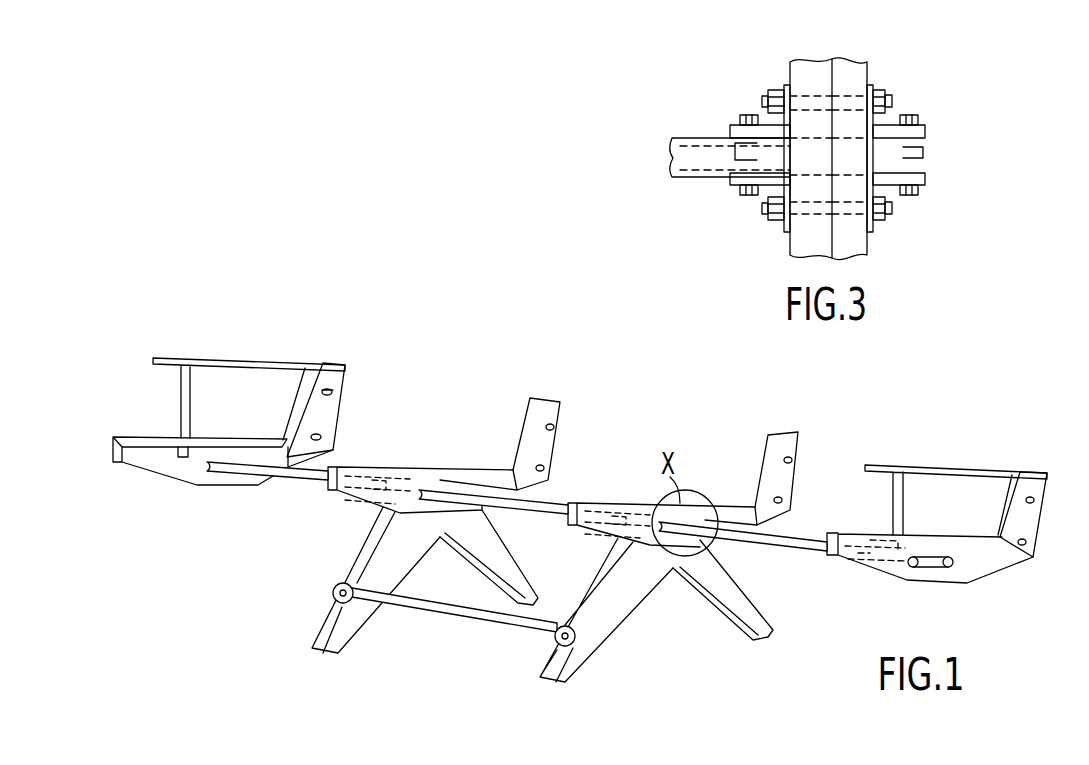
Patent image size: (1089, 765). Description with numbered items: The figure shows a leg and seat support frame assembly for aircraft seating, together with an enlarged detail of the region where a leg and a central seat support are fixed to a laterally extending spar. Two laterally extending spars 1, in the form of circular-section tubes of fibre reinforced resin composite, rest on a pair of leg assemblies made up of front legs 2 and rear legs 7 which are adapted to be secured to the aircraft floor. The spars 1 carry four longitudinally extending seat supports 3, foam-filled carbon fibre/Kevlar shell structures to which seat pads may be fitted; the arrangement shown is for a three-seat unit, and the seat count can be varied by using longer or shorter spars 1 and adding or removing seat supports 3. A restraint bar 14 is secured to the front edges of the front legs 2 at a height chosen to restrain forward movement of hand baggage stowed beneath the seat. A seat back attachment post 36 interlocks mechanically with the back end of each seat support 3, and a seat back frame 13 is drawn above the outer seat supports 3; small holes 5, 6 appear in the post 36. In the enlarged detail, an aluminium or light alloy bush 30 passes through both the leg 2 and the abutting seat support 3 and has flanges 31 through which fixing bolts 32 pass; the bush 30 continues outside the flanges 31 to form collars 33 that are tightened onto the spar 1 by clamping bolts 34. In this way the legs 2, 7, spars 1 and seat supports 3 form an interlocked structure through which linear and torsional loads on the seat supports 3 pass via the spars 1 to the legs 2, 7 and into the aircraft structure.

In FIG. 3, the laterally extending spar 1 is at (675, 153).
In FIG. 1, the laterally extending spar 1 is at (285, 482).
In FIG. 3, the front leg 2 is at (808, 61).
In FIG. 1, the front leg 2 is at (400, 565).
In FIG. 3, the seat support 3 is at (851, 61).
In FIG. 1, the seat support 3 is at (153, 463).
In FIG. 1, the hole 5 is at (334, 393).
In FIG. 1, the hole 6 is at (322, 437).
In FIG. 1, the leg 7 is at (514, 572).
In FIG. 1, the backrest 13 is at (249, 358).
In FIG. 1, the restraint bar 14 is at (332, 606).
In FIG. 3, the bush 30 is at (858, 126).
In FIG. 3, the flange 31 is at (786, 84).
In FIG. 3, the fixing bolt 32 is at (886, 102).
In FIG. 3, the collar 33 is at (892, 153).
In FIG. 3, the clamping bolt 34 is at (733, 127).
In FIG. 1, the seat back attachment post 36 is at (345, 365).